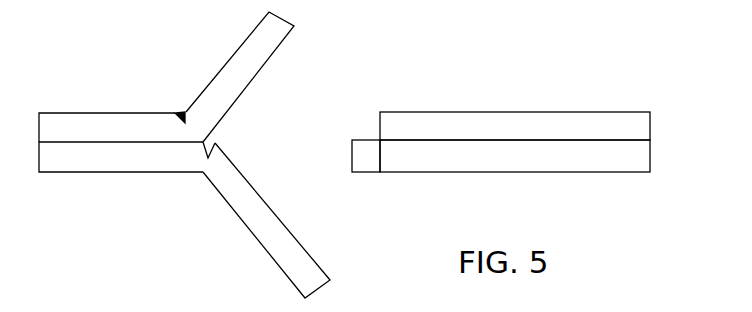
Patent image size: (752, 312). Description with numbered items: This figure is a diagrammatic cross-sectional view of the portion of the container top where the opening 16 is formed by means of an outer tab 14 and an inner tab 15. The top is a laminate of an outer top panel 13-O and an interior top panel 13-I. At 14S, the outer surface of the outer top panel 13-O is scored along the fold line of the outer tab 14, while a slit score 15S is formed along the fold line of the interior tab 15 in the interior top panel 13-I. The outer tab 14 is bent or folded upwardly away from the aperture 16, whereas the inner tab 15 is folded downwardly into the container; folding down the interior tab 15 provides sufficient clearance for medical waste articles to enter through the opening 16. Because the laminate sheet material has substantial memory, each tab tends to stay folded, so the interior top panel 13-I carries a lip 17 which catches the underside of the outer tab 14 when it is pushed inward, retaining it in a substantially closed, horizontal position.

The outer top panel 13-O is at (111, 124).
The interior top panel 13-I is at (114, 167).
The outer tab 14 is at (275, 43).
The score 14S is at (183, 112).
The inner tab 15 is at (277, 236).
The slit score 15S is at (221, 141).
The opening 16 is at (320, 137).
The lip 17 is at (363, 145).